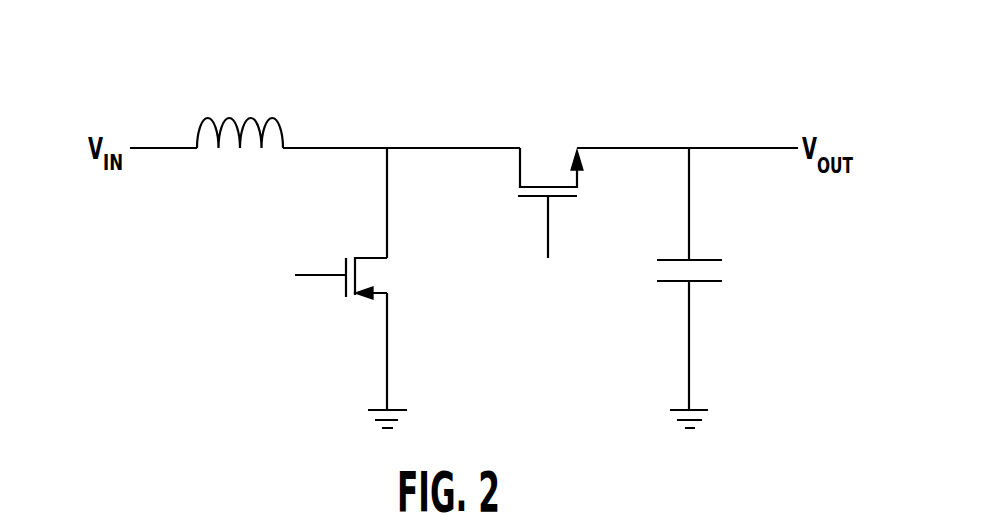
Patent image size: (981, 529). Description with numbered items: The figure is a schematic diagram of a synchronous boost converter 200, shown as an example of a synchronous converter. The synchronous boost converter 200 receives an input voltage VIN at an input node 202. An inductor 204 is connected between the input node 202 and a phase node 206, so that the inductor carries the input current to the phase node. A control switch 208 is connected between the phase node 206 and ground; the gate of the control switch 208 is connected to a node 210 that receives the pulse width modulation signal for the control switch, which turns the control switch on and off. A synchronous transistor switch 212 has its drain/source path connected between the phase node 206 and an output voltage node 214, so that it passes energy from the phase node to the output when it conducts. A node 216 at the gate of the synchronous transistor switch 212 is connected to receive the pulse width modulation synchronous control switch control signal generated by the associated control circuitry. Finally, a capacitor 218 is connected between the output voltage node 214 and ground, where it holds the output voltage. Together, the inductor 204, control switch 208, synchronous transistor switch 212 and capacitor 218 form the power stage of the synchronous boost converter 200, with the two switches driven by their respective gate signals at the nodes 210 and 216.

The synchronous boost converter 200 is at (775, 108).
The input voltage node 202 is at (173, 148).
The inductor 204 is at (233, 117).
The phase node 206 is at (387, 146).
The control switch 208 is at (378, 275).
The control switch gate node 210 is at (312, 274).
The synchronous transistor switch 212 is at (553, 153).
The output voltage node 214 is at (689, 137).
The synchronous switch gate node 216 is at (548, 248).
The capacitor 218 is at (722, 281).